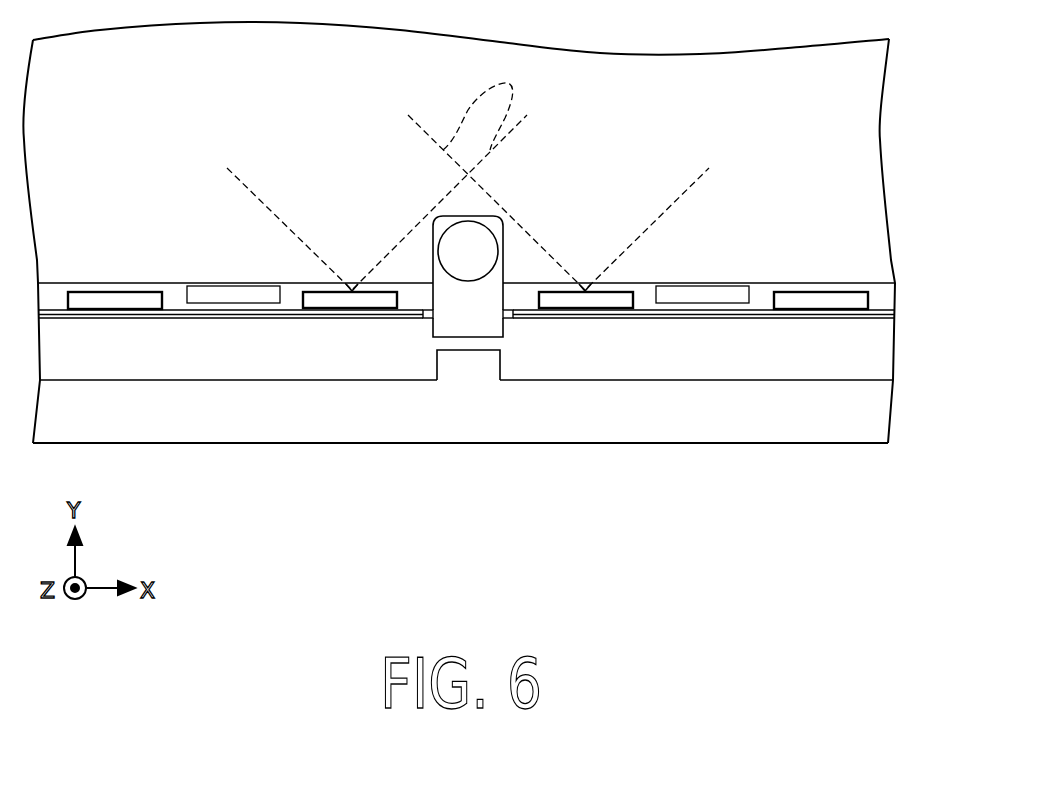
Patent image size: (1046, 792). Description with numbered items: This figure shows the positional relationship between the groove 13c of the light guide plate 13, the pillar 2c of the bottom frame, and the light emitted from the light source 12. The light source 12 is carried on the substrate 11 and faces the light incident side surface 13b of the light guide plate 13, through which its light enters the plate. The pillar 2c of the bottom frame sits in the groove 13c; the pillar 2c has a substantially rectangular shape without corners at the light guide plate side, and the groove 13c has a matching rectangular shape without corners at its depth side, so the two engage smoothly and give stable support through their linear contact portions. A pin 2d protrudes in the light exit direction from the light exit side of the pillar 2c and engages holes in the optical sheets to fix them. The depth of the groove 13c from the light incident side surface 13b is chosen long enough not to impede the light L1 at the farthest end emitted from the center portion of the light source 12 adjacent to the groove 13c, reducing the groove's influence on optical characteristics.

The light guide plate 13 is at (812, 68).
The light incident side surface 13b is at (412, 293).
The groove 13c is at (435, 240).
The substrate 11 is at (273, 309).
The light source 12 is at (330, 308).
The pillar 2c is at (503, 293).
The pin 2d is at (468, 251).
The light L1 is at (468, 172).